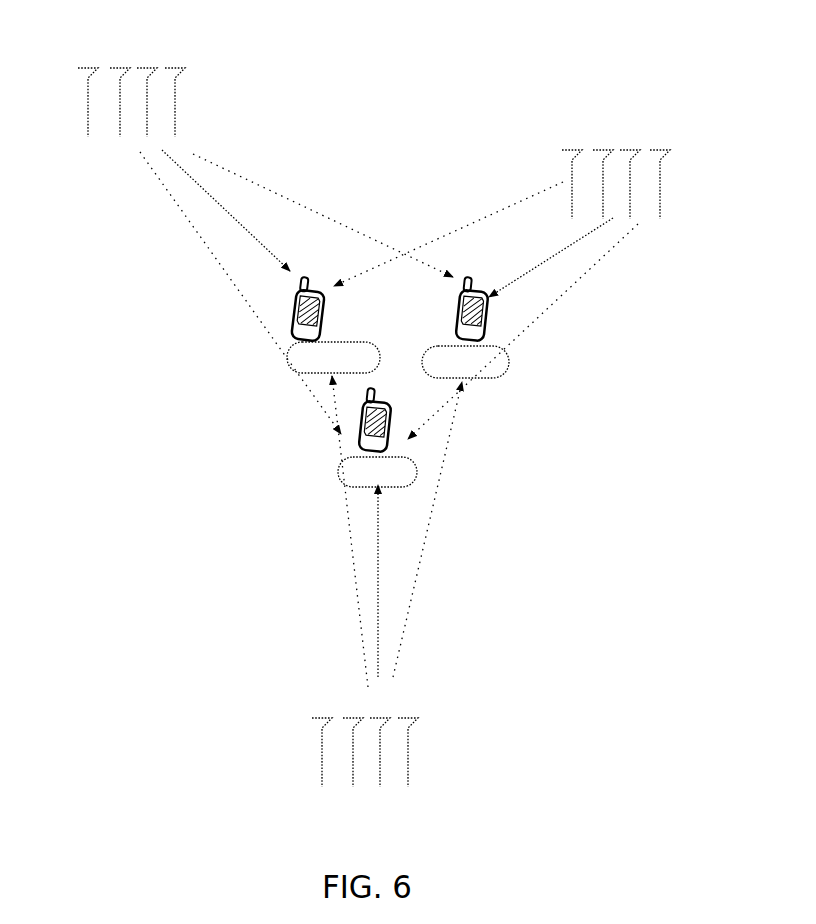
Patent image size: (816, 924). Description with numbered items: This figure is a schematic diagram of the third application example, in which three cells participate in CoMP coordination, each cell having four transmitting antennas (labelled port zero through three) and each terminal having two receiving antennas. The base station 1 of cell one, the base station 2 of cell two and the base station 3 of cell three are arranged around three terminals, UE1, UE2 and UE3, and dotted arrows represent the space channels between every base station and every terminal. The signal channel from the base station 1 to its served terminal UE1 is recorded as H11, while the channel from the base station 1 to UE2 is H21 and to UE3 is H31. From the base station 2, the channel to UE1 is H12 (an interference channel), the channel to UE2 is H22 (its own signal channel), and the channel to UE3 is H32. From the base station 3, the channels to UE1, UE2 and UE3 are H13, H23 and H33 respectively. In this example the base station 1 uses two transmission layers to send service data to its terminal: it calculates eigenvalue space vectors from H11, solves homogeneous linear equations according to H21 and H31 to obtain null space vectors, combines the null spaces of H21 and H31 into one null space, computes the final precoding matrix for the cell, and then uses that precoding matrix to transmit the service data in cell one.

The base station 1 is at (111, 119).
The base station 2 is at (643, 191).
The base station 3 is at (417, 759).
The terminal UE1 is at (333, 325).
The terminal UE2 is at (465, 328).
The terminal UE3 is at (377, 437).
The space channel H11 is at (229, 210).
The space channel H12 is at (323, 215).
The space channel H31 is at (240, 293).
The space channel H21 is at (445, 227).
The space channel H22 is at (547, 257).
The space channel H32 is at (523, 331).
The space channel H13 is at (322, 531).
The space channel H33 is at (401, 581).
The space channel H23 is at (435, 529).